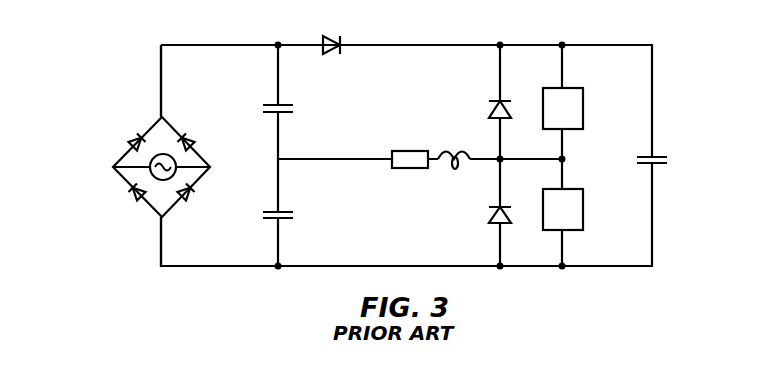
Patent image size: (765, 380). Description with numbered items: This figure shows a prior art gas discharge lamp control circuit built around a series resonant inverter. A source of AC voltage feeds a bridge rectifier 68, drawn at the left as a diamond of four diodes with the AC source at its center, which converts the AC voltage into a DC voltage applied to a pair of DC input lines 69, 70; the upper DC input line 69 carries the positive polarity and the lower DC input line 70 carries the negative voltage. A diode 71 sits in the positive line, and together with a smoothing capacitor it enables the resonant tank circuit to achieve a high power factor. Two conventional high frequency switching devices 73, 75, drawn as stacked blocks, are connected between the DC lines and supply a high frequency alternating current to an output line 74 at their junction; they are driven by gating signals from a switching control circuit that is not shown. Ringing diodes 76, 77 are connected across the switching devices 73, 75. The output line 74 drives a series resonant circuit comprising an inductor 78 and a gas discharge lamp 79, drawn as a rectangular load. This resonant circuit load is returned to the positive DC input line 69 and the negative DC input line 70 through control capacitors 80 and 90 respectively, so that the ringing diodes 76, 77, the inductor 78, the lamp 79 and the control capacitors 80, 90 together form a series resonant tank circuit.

The bridge rectifier 68 is at (118, 149).
The DC input line 69 is at (161, 55).
The DC input line 70 is at (161, 240).
The diode 71 is at (331, 53).
The high frequency switching device 73 is at (585, 100).
The output line 74 is at (545, 161).
The high frequency switching device 75 is at (585, 208).
The ringing diode 76 is at (488, 107).
The ringing diode 77 is at (487, 212).
The inductor 78 is at (458, 165).
The gas discharge lamp 79 is at (396, 170).
The control capacitor 80 is at (270, 118).
The control capacitor 90 is at (272, 210).